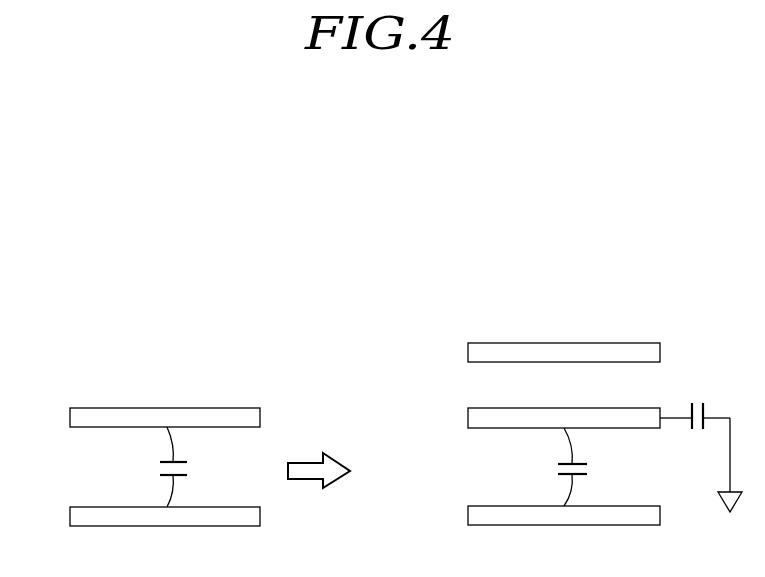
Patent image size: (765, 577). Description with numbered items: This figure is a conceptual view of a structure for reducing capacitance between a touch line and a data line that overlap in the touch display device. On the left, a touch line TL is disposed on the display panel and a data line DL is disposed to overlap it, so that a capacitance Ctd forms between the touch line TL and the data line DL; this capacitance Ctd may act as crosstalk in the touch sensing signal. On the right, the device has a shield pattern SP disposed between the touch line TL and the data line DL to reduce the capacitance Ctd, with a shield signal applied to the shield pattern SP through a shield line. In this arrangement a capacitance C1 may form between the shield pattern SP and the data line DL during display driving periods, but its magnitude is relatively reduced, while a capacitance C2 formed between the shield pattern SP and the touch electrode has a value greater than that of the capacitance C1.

The touch line TL is at (344, 386).
The data line DL is at (344, 517).
The capacitance Ctd is at (195, 467).
The shield pattern SP is at (543, 419).
The capacitance C1 is at (590, 467).
The capacitance C2 is at (701, 457).